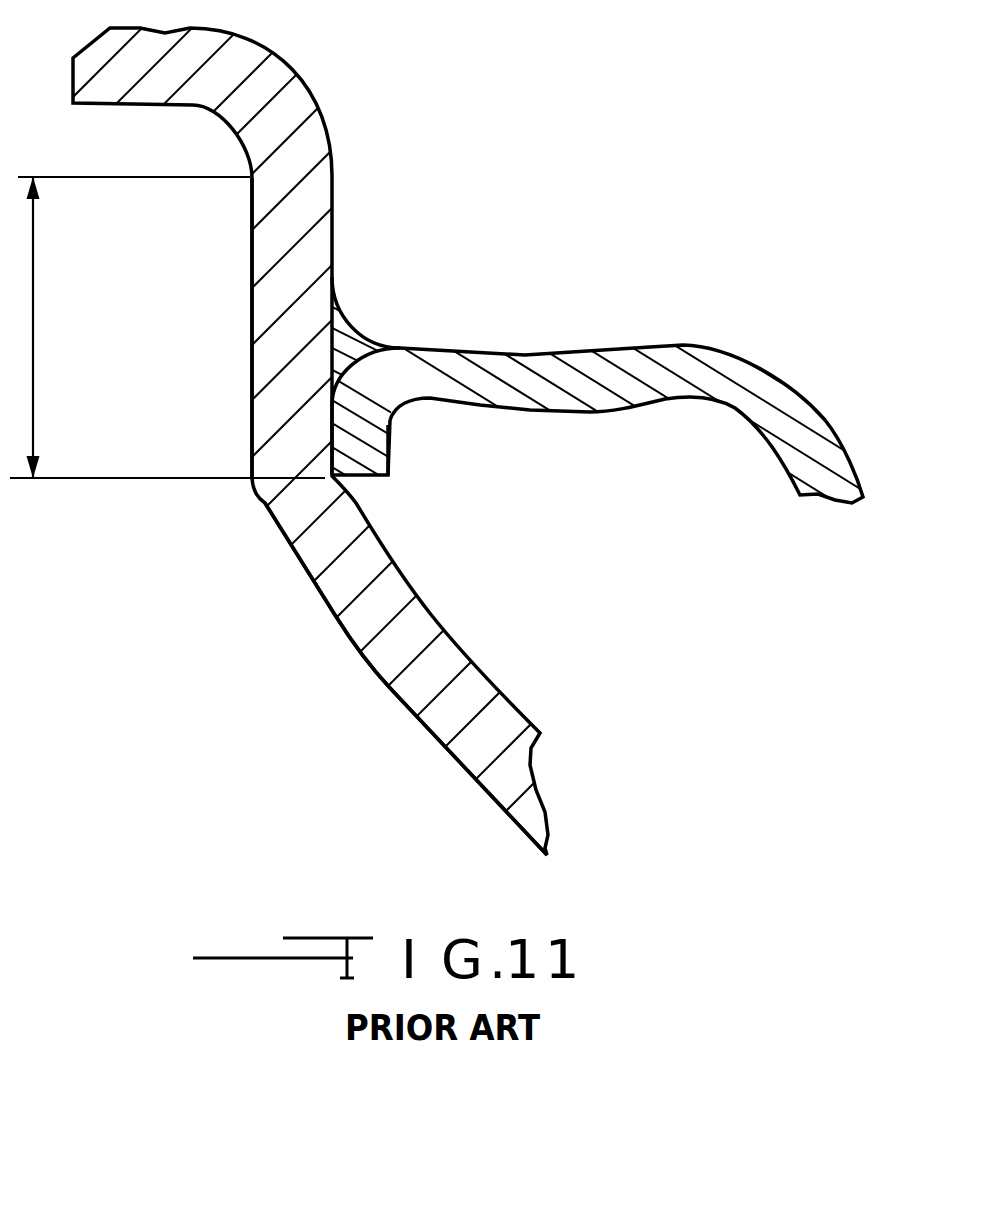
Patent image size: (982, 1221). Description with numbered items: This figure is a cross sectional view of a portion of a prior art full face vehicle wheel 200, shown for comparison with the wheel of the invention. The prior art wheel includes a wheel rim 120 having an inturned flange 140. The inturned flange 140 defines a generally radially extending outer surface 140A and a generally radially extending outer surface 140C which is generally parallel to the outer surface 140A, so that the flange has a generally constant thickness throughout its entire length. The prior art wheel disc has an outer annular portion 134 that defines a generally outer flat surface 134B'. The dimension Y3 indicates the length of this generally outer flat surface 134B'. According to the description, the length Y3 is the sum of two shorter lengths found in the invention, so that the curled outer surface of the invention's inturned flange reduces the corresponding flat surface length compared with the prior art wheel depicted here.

The wheel rim 120 is at (655, 343).
The outer annular portion 134 is at (357, 647).
The generally outer flat surface 134B' is at (183, 328).
The inturned flange 140 is at (425, 470).
The generally radially extending outer surface 140A is at (330, 443).
The generally radially extending outer surface 140C is at (390, 448).
The prior art full face vehicle wheel 200 is at (300, 607).
The length Y3 is at (35, 335).